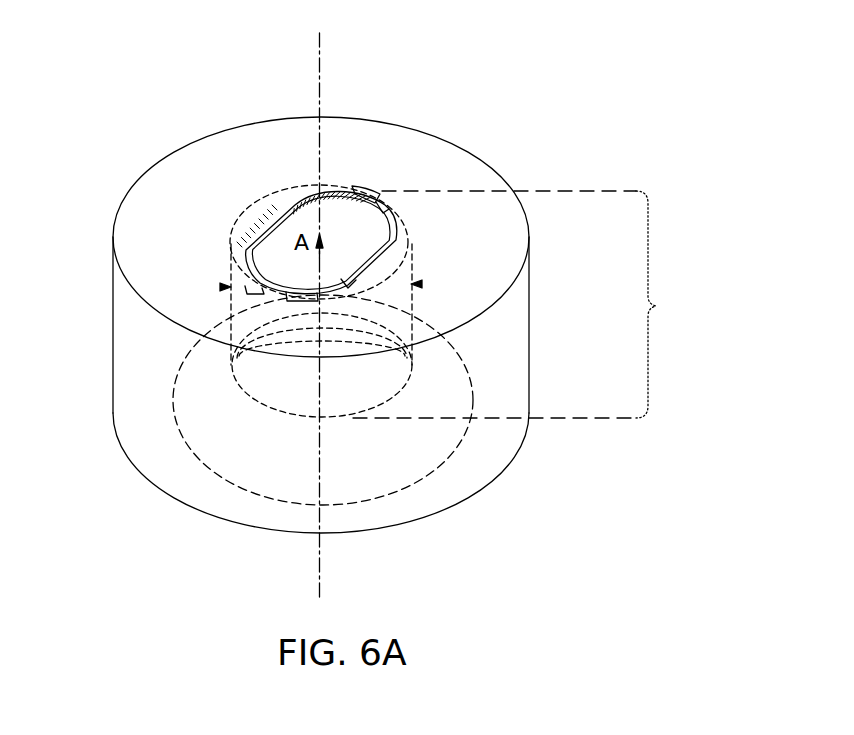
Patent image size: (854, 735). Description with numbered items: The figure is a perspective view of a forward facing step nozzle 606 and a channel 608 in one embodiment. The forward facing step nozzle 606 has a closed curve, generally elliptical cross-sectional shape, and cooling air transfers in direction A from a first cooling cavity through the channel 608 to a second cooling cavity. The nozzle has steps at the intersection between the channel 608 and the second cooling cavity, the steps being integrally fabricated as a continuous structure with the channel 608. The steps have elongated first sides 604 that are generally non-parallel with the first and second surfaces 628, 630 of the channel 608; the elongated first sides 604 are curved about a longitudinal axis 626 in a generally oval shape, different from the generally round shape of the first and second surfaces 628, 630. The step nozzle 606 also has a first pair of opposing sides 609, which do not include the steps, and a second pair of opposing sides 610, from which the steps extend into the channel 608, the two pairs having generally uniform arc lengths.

The elongated first sides 604 is at (276, 202).
The forward facing step nozzle 606 is at (366, 188).
The channel 608 is at (658, 306).
The first pair of opposing sides 609 is at (340, 186).
The second pair of opposing sides 610 is at (265, 211).
The longitudinal axis 626 is at (322, 50).
The first surface 628 is at (421, 284).
The second surface 630 is at (222, 287).